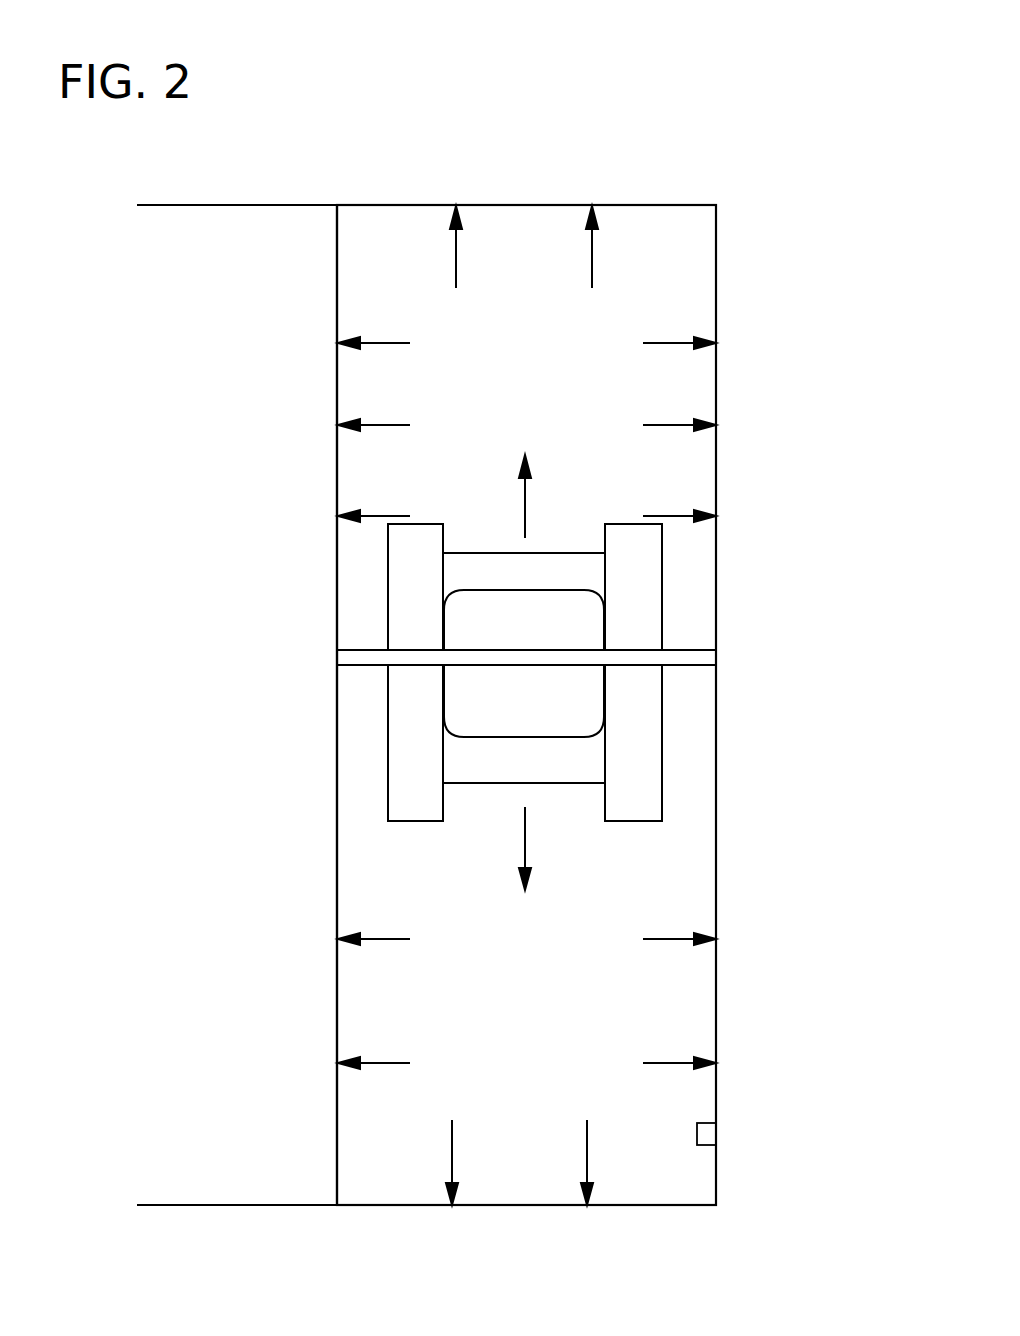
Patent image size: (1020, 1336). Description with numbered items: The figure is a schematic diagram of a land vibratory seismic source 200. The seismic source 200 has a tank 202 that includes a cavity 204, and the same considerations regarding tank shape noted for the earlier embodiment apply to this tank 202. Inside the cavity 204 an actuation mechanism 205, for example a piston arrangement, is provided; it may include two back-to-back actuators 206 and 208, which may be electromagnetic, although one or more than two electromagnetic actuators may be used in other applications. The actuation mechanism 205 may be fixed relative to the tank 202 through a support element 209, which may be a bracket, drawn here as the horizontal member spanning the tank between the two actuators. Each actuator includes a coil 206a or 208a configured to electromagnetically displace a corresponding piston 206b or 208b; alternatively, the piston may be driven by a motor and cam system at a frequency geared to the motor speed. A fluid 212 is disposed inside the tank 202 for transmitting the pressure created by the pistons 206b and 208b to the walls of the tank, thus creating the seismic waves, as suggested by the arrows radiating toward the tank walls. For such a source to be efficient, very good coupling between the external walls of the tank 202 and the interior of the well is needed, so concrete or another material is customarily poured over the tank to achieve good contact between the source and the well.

The seismic source 200 is at (491, 162).
The tank 202 is at (337, 285).
The cavity 204 is at (548, 380).
The actuation mechanism 205 is at (360, 710).
The actuator 206 is at (682, 587).
The coil 206a is at (403, 593).
The piston 206b is at (461, 565).
The actuator 208 is at (684, 755).
The coil 208a is at (403, 740).
The piston 208b is at (462, 768).
The support element 209 is at (695, 650).
The fluid 212 is at (548, 1031).